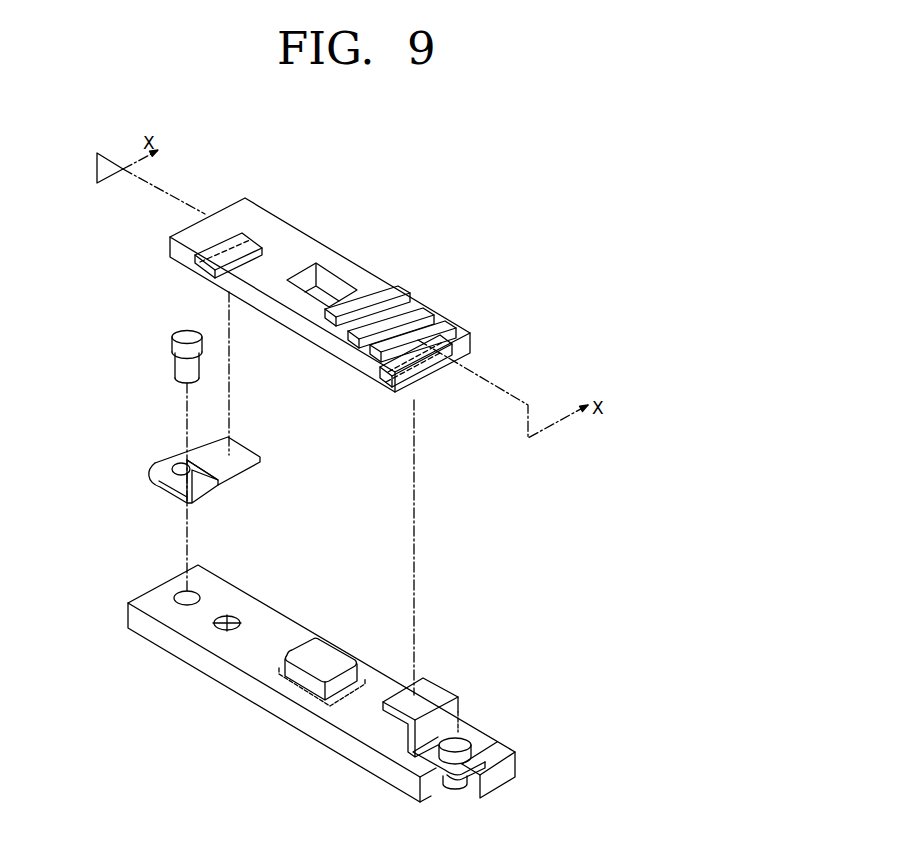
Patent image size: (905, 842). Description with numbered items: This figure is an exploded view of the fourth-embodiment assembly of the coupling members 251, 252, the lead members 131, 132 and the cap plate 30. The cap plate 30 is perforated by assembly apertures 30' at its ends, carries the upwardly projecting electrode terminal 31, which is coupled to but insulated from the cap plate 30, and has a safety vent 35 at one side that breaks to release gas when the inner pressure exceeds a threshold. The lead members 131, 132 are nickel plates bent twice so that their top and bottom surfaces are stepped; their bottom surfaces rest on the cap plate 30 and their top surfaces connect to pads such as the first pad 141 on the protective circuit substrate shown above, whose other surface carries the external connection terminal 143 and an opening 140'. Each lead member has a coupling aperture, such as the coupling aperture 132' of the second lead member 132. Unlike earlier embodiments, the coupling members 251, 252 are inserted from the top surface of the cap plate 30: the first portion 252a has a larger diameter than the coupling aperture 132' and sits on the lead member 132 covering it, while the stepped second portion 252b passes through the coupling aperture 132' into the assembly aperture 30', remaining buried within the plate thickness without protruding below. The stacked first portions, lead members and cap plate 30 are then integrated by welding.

The cap plate 30 is at (321, 674).
The assembly apertures 30' is at (166, 568).
The electrode terminal 31 is at (308, 681).
The safety vent 35 is at (234, 617).
The first lead member 131 is at (483, 753).
The second lead member 132 is at (163, 461).
The coupling aperture 132' is at (128, 447).
The opening in upper plate 140' is at (334, 256).
The first pad 141 is at (233, 236).
The external connection terminal 143 is at (405, 305).
The coupling member 251 is at (461, 740).
The coupling member 252 is at (112, 355).
The first portion 252a is at (170, 337).
The second portion 252b is at (176, 361).